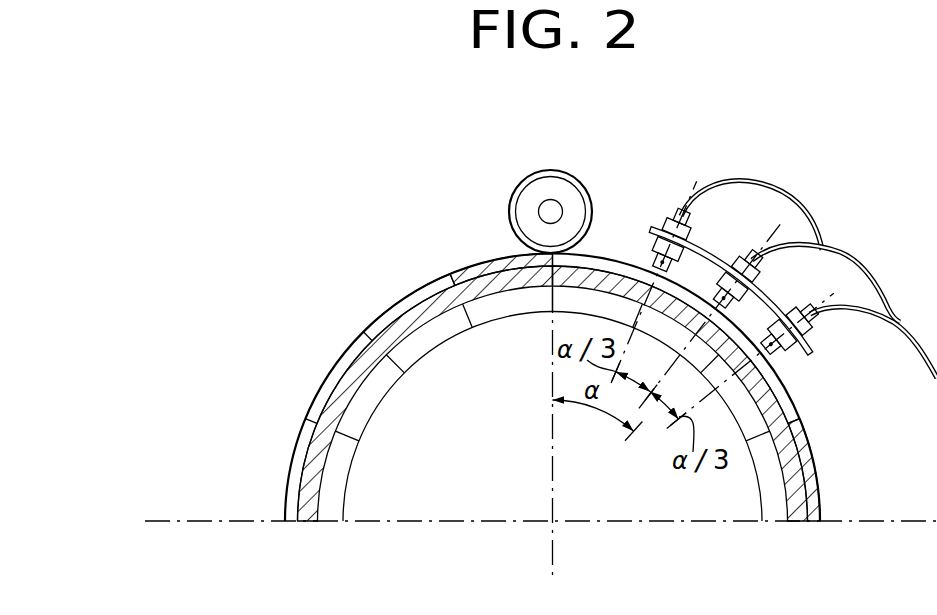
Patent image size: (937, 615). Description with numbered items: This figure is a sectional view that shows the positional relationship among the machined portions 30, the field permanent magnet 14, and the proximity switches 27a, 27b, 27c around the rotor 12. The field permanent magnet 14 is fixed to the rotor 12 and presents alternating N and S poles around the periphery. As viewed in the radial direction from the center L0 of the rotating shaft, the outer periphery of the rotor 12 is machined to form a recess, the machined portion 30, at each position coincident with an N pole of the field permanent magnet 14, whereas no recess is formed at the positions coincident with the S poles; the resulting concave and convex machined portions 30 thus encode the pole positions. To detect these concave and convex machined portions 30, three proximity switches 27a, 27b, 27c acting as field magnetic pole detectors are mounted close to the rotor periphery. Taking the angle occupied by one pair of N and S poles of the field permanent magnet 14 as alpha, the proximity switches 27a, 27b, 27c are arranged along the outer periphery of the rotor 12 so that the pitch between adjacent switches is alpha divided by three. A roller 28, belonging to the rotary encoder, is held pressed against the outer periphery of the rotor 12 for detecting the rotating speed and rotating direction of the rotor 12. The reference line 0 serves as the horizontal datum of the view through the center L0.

The reference line 0 is at (842, 519).
The center of the rotating shaft L0 is at (548, 524).
The rotor 12 is at (327, 384).
The field permanent magnet 14 is at (810, 438).
The proximity switch 27a is at (675, 222).
The proximity switch 27b is at (742, 268).
The proximity switch 27c is at (807, 312).
The roller 28 is at (569, 200).
The machined portion 30 is at (408, 299).